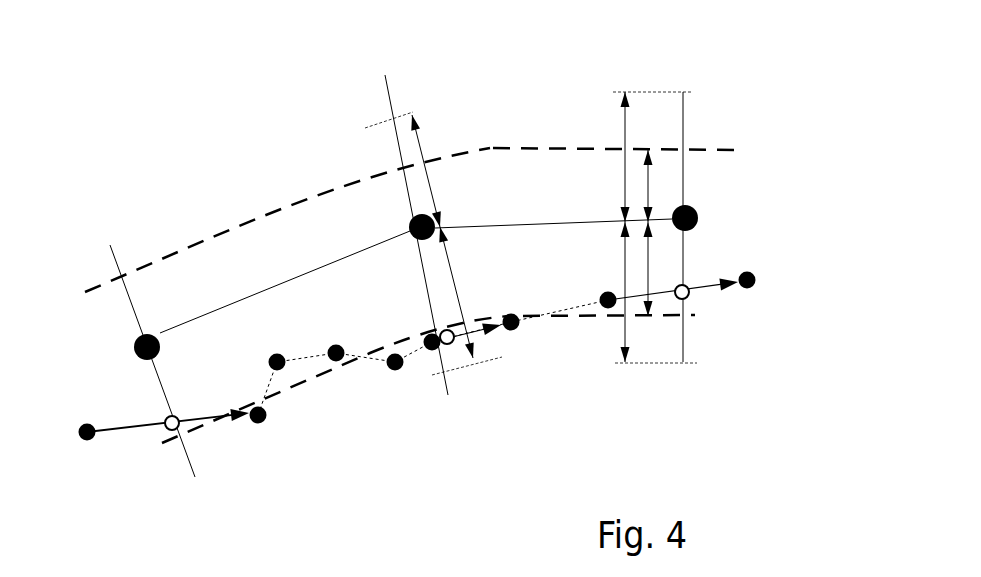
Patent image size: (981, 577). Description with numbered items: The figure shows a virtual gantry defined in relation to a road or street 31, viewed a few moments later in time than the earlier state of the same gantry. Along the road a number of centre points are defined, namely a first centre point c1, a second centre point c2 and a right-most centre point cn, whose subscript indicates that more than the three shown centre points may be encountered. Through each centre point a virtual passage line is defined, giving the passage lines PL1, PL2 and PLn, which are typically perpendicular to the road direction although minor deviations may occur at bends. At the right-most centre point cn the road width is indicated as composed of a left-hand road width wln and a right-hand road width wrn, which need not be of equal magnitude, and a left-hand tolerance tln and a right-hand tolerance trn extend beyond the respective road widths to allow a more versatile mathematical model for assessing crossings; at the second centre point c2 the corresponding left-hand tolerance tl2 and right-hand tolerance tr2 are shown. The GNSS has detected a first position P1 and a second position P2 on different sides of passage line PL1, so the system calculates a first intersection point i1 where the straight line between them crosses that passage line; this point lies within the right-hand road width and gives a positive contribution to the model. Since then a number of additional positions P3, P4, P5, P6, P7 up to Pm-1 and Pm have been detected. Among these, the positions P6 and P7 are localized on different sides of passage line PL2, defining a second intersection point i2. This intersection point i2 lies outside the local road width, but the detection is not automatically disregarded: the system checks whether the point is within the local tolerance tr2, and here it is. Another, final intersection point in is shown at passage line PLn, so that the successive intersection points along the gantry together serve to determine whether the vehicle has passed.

The road or street 31 is at (322, 220).
The first passage line PL1 is at (142, 347).
The second passage line PL2 is at (408, 222).
The n-th passage line PLn is at (683, 251).
The first centre point c1 is at (160, 357).
The second centre point c2 is at (406, 226).
The n-th centre point cn is at (694, 233).
The first position P1 is at (79, 453).
The second position P2 is at (271, 435).
The third position P3 is at (272, 345).
The fourth position P4 is at (340, 376).
The fifth position P5 is at (396, 380).
The sixth position P6 is at (423, 323).
The seventh position P7 is at (513, 302).
The (m-1)-th position Pm-1 is at (598, 285).
The m-th position Pm is at (760, 263).
The first intersection point i1 is at (158, 410).
The second intersection point i2 is at (453, 379).
The final intersection point in is at (686, 298).
The left-hand tolerance at second centre point tl2 is at (407, 157).
The right-hand tolerance at second centre point tr2 is at (473, 311).
The left-hand tolerance at n-th centre point tln is at (673, 149).
The right-hand tolerance at n-th centre point trn is at (676, 301).
The left-hand road width wln is at (693, 181).
The right-hand road width wrn is at (696, 278).